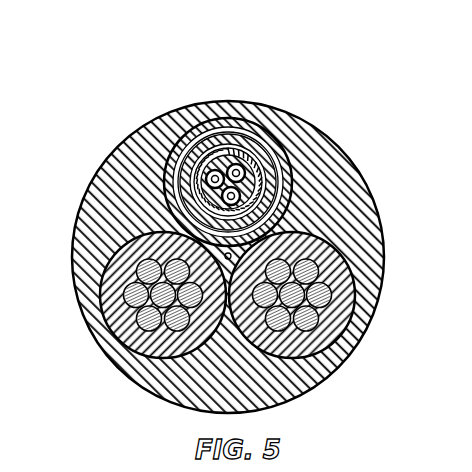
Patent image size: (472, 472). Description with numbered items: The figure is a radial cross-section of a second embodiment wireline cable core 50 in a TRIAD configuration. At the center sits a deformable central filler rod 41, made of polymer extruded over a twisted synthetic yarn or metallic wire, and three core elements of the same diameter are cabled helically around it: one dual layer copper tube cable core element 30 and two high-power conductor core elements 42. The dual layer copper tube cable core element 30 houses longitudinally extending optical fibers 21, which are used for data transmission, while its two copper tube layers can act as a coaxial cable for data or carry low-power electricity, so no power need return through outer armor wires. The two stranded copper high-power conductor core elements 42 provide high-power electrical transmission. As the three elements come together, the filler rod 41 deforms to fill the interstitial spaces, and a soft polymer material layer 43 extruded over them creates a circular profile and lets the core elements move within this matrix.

The cable core 50 is at (367, 60).
The optical fibers 21 is at (228, 165).
The dual layer copper tube cable core element 30 is at (254, 112).
The deformable central filler rod 41 is at (178, 223).
The high-power conductor core elements 42 is at (119, 353).
The soft polymer material layer 43 is at (343, 185).